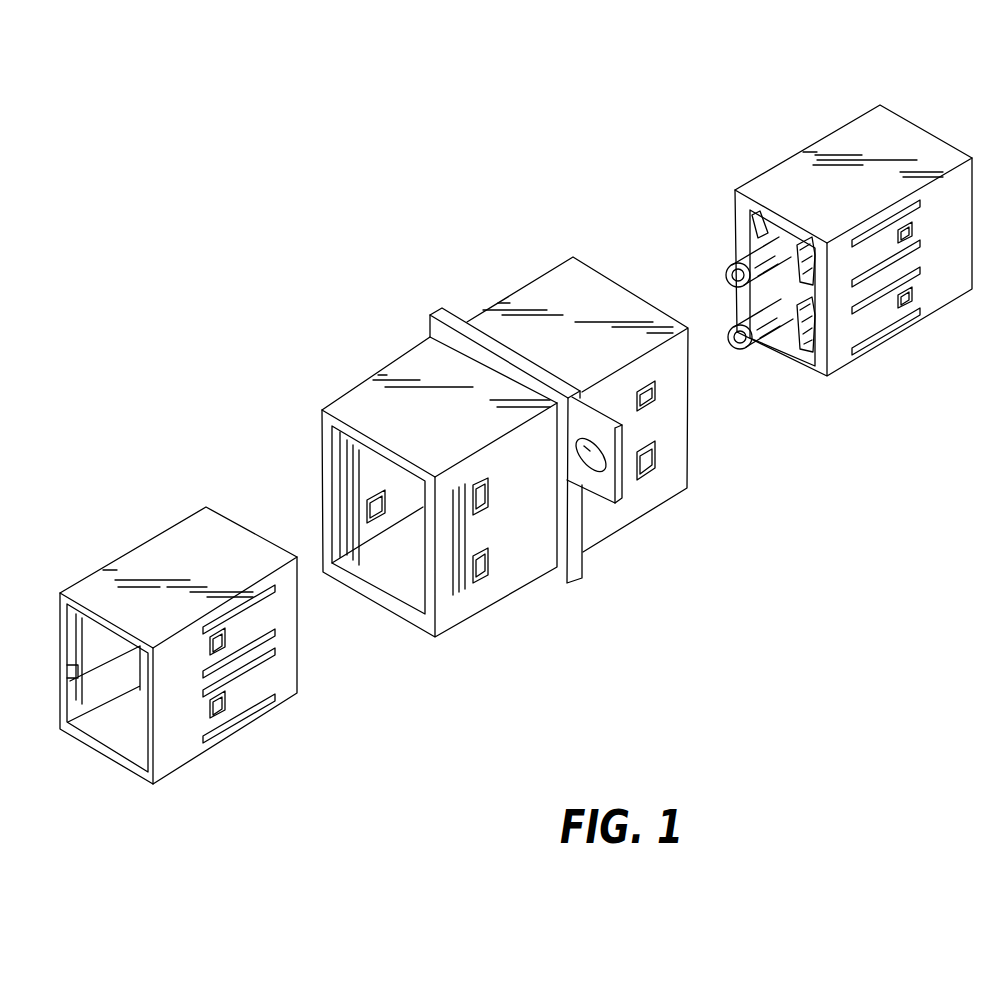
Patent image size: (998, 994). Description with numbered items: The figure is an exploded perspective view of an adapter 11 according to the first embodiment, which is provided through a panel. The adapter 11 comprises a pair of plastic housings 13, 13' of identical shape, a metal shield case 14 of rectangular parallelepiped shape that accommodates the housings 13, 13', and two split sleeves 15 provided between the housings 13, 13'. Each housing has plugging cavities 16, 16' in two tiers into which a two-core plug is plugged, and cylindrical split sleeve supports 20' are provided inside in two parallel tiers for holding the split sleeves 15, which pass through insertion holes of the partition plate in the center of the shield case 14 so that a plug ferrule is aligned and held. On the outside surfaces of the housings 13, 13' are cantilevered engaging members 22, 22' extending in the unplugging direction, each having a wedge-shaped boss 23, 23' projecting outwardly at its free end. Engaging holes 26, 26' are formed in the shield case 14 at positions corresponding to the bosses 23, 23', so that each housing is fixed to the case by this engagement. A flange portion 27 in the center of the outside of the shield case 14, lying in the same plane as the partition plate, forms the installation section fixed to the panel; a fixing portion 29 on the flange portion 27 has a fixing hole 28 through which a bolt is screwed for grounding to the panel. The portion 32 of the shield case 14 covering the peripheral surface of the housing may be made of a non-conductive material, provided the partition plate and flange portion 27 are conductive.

The adapter 11 is at (757, 500).
The housing 13 is at (178, 689).
The housing 13' is at (832, 230).
The shield case 14 is at (402, 357).
The split sleeves 15 is at (768, 256).
The plugging cavities 16 is at (160, 697).
The plugging cavities 16' is at (858, 207).
The split sleeve supports 20' is at (809, 332).
The engaging members 22 is at (272, 669).
The engaging members 22' is at (893, 324).
The wedge-shaped boss 23 is at (252, 710).
The wedge-shaped boss 23' is at (933, 310).
The engaging holes 26 is at (504, 574).
The engaging holes 26' is at (705, 430).
The flange portion 27 is at (582, 575).
The fixing hole 28 is at (590, 468).
The fixing portion 29 is at (607, 483).
The portion for covering the peripheral surface of the housing 32 is at (370, 415).